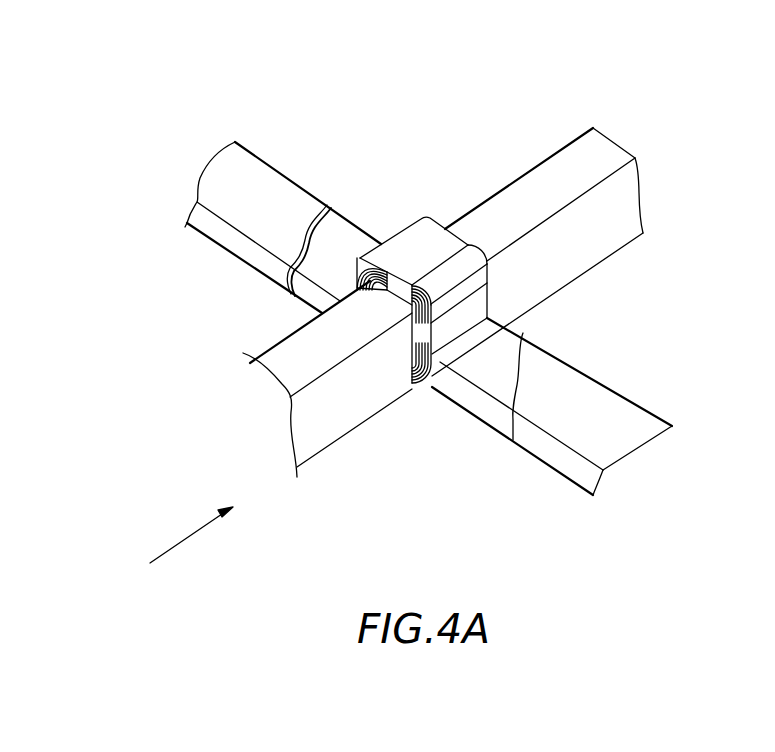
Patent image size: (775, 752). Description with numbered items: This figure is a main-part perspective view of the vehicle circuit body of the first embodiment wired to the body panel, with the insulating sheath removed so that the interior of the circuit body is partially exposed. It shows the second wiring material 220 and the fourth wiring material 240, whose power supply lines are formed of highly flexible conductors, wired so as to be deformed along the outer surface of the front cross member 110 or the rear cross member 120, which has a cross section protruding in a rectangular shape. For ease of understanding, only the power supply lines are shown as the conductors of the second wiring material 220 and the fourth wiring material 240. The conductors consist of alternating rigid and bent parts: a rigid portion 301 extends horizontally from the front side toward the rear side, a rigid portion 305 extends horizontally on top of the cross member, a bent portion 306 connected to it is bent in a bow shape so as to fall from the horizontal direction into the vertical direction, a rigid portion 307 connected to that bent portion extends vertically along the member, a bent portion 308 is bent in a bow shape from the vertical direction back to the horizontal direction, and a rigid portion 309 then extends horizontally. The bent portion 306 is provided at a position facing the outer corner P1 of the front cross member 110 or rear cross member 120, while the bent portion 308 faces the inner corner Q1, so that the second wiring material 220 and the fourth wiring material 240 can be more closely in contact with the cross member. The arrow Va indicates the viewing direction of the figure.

The front cross member 110 is at (496, 262).
The rear cross member 120 is at (496, 262).
The second wiring material 220 is at (428, 292).
The fourth wiring material 240 is at (428, 292).
The rigid portion 301 is at (508, 308).
The rigid portion 305 is at (508, 308).
The bent portion 306 is at (481, 270).
The rigid portion 307 is at (483, 302).
The bent portion 308 is at (417, 378).
The rigid portion 309 is at (483, 412).
The outer corner P1 is at (580, 197).
The inner corner Q1 is at (623, 247).
The viewing direction Va is at (180, 553).